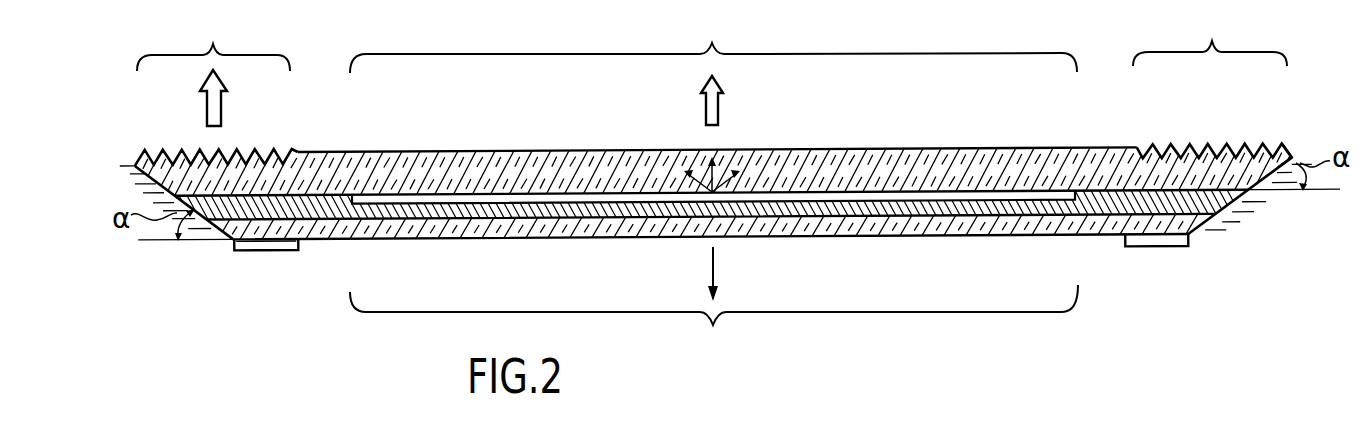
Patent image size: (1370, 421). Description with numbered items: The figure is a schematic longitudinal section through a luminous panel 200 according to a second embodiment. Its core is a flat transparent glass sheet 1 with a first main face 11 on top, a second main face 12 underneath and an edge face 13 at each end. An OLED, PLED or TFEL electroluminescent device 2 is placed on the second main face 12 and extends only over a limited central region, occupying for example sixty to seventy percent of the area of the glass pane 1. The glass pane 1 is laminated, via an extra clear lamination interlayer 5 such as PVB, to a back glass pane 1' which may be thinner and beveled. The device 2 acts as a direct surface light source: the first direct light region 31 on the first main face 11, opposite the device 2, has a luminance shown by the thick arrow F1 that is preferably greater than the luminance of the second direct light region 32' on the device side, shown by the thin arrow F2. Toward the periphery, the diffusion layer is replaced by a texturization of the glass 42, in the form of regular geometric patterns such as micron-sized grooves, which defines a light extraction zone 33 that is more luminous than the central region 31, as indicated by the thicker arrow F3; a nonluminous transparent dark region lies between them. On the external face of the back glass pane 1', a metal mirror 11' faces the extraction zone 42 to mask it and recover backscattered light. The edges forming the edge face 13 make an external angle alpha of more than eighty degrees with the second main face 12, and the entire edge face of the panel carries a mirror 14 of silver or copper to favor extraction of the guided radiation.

The glass sheet 1 is at (726, 143).
The back glass pane 1' is at (714, 247).
The electroluminescent device 2 is at (537, 202).
The lamination interlayer 5 is at (249, 242).
The first main face 11 is at (717, 117).
The metal mirror 11' is at (711, 262).
The second main face 12 is at (1218, 212).
The edge face 13 is at (1302, 159).
The mirror 14 is at (1277, 180).
The first direct light region 31 is at (713, 41).
The second direct light region 32' is at (714, 323).
The light extraction zone 33 is at (712, 38).
The texturization of the glass 42 is at (190, 151).
The luminous panel 200 is at (269, 290).
The thick arrow F1 is at (720, 106).
The thin arrow F2 is at (717, 264).
The thicker arrow F3 is at (222, 108).